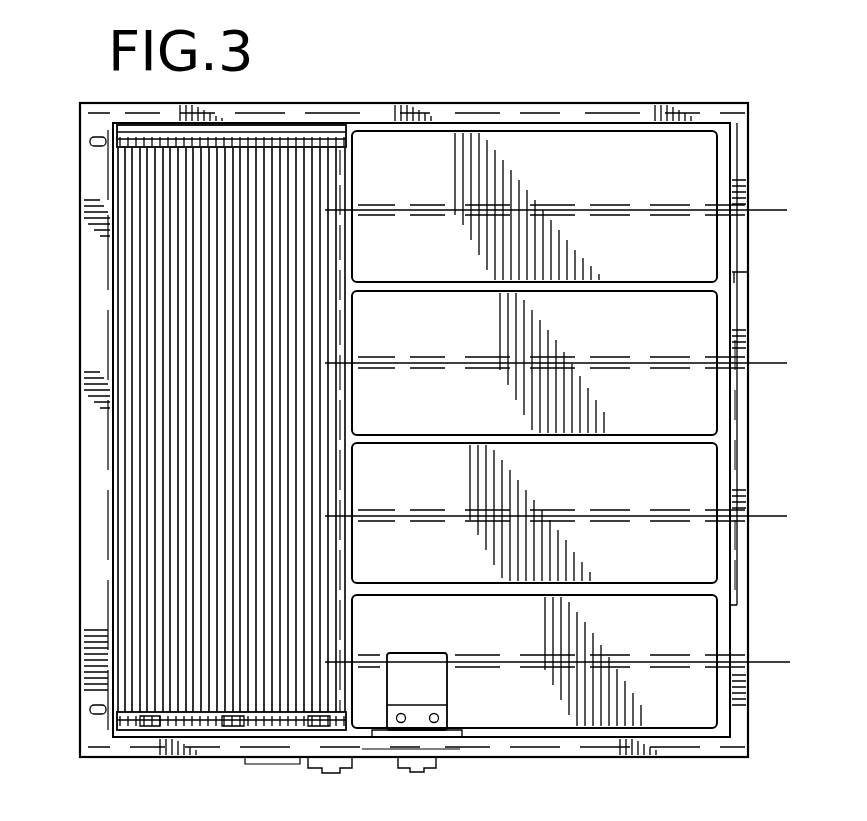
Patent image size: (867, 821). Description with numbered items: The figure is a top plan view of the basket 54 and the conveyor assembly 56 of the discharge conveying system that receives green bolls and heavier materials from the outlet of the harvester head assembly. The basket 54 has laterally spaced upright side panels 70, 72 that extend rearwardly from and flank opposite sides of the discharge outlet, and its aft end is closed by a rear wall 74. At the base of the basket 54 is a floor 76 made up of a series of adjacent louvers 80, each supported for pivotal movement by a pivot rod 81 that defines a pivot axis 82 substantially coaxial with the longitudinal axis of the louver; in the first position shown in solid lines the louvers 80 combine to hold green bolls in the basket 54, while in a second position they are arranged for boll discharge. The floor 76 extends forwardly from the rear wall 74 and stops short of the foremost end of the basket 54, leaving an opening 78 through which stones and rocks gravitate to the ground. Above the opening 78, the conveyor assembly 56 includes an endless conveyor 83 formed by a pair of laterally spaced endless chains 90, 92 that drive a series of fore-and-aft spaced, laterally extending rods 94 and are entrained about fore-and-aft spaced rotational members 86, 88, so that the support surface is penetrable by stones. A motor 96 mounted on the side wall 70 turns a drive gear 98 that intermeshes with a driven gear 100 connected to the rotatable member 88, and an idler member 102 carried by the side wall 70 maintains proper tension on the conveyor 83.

The basket 54 is at (528, 768).
The conveyor assembly 56 is at (120, 300).
The side panel 70 is at (685, 752).
The side panel 72 is at (548, 108).
The rear wall 74 is at (744, 585).
The floor 76 is at (678, 404).
The opening 78 is at (165, 458).
The louver 80 is at (534, 429).
The pivot rod 81 is at (588, 203).
The pivot axis 82 is at (762, 210).
The endless conveyor 83 is at (150, 222).
The rotational member 86 is at (150, 735).
The rotational member 88 is at (320, 735).
The endless chain 90 is at (175, 720).
The endless chain 92 is at (150, 148).
The rod 94 is at (175, 396).
The motor 96 is at (417, 695).
The drive gear 98 is at (418, 770).
The driven gear 100 is at (342, 770).
The idler member 102 is at (232, 735).